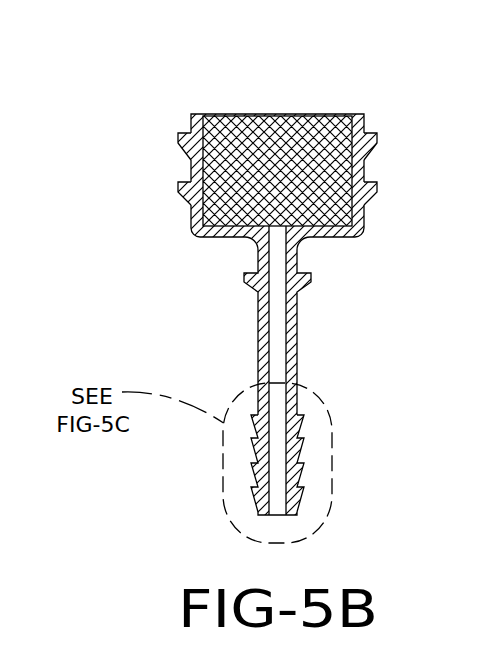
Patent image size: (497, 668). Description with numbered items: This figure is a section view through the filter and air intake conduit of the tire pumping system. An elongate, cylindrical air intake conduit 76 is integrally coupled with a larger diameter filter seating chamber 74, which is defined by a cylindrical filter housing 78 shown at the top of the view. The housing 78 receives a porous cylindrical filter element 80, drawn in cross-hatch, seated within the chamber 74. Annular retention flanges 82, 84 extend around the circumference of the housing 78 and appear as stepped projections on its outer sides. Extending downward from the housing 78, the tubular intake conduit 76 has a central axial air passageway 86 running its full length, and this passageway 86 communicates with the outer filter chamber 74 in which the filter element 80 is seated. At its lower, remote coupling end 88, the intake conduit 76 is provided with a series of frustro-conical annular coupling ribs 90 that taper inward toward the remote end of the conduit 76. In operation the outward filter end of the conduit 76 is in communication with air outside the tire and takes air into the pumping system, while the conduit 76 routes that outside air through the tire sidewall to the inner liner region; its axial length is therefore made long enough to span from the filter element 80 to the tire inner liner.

The filter seating chamber 74 is at (210, 110).
The air intake conduit 76 is at (290, 356).
The filter housing 78 is at (185, 170).
The filter element 80 is at (285, 132).
The annular retention flange 82 is at (376, 146).
The annular retention flange 84 is at (376, 191).
The central axial air passageway 86 is at (279, 333).
The remote coupling end 88 is at (276, 520).
The coupling ribs 90 is at (302, 448).